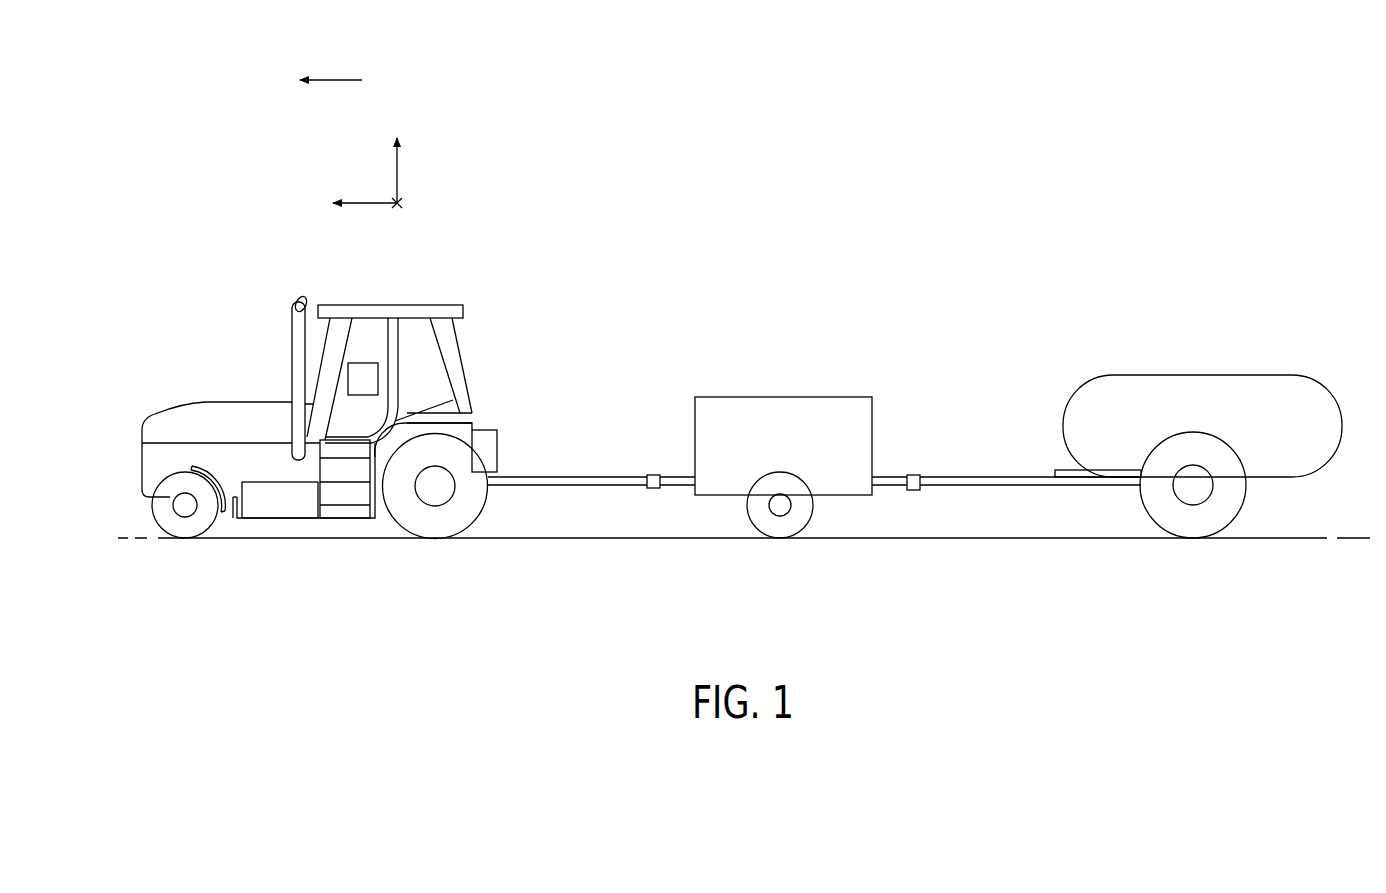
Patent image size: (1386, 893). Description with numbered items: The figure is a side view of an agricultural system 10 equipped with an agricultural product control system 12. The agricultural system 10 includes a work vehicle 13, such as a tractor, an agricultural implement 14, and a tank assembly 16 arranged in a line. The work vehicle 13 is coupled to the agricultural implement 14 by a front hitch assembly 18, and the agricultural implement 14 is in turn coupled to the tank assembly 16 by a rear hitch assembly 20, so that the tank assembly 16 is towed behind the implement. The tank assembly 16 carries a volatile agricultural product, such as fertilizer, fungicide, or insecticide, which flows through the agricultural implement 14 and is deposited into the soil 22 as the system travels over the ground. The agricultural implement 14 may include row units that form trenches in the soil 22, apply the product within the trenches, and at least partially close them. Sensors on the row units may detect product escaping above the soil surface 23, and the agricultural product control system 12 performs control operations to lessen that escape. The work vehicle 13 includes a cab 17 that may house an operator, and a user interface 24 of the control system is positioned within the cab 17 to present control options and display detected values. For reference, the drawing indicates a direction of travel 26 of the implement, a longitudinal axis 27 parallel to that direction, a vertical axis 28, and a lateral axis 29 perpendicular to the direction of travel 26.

The agricultural system 10 is at (1000, 222).
The agricultural product control system 12 is at (786, 346).
The work vehicle 13 is at (240, 402).
The agricultural implement 14 is at (785, 397).
The tank assembly 16 is at (1207, 375).
The cab 17 is at (462, 365).
The front hitch assembly 18 is at (680, 462).
The rear hitch assembly 20 is at (895, 461).
The soil 22 is at (508, 633).
The soil surface 23 is at (362, 538).
The user interface 24 is at (378, 378).
The direction of travel 26 is at (343, 80).
The longitudinal axis 27 is at (370, 203).
The vertical axis 28 is at (397, 172).
The lateral axis 29 is at (402, 203).